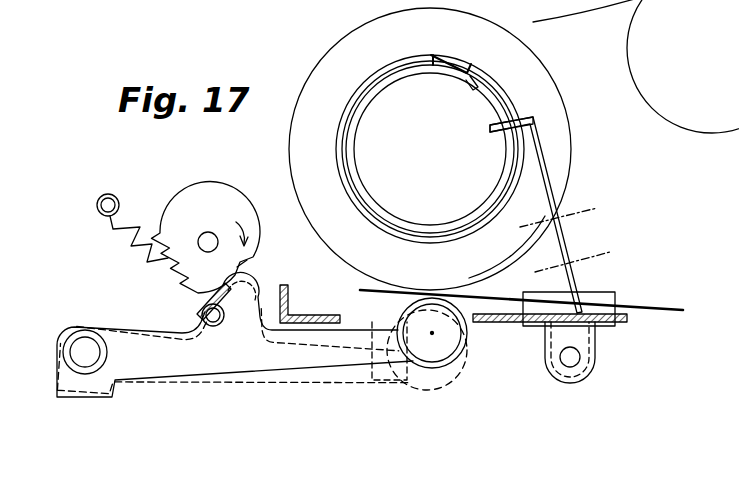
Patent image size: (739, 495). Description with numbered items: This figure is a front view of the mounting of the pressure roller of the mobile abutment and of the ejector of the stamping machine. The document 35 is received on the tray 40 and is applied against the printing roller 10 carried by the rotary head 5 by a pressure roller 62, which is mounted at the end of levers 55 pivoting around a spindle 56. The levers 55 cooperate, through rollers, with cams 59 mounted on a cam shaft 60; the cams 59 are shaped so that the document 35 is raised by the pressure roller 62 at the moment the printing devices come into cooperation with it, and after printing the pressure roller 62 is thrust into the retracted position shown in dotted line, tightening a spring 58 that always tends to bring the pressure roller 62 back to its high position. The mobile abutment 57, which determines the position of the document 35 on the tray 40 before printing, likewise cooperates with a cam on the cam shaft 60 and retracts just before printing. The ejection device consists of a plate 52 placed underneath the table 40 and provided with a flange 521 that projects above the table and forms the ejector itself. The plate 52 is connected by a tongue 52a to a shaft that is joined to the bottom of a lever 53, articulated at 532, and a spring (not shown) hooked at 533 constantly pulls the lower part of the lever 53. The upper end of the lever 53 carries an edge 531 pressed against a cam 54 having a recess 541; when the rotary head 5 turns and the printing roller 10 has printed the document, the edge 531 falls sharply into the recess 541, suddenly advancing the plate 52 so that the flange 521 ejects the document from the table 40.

The rotary head 5 is at (563, 142).
The printing roller 10 is at (490, 277).
The document 35 is at (658, 308).
The tray 40 is at (519, 323).
The plate 52 is at (542, 330).
The tongue 52a is at (593, 338).
The flange 521 is at (604, 293).
The lever 53 is at (562, 244).
The edge 531 is at (522, 121).
The articulation 532 is at (538, 238).
The spring hook 533 is at (566, 264).
The cam 54 is at (366, 96).
The recess 541 is at (457, 72).
The lever 55 is at (197, 348).
The spindle 56 is at (83, 350).
The mobile abutment 57 is at (372, 368).
The spring 58 is at (131, 246).
The cam 59 is at (205, 205).
The cam shaft 60 is at (200, 234).
The pressure roller 62 is at (447, 366).